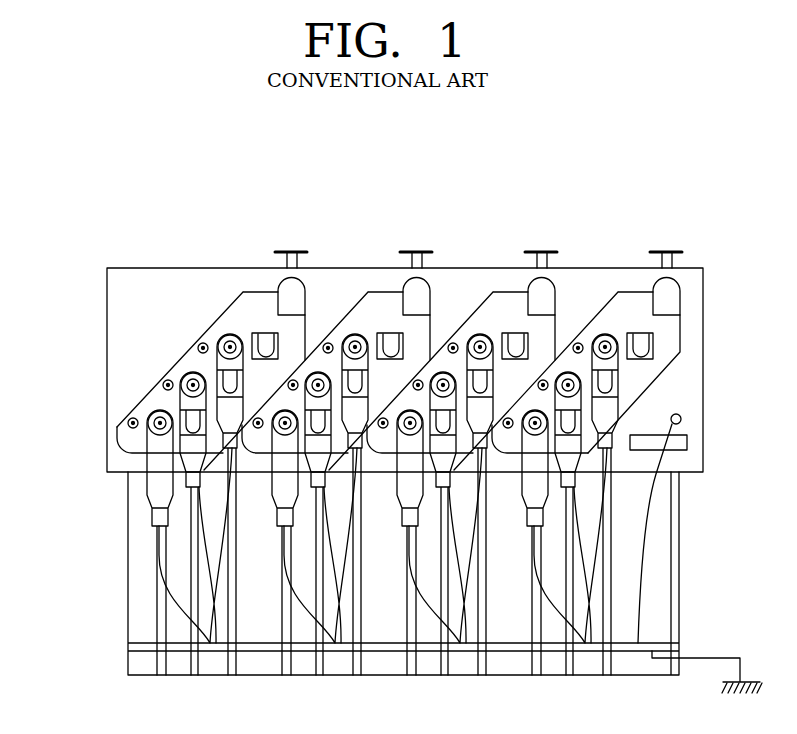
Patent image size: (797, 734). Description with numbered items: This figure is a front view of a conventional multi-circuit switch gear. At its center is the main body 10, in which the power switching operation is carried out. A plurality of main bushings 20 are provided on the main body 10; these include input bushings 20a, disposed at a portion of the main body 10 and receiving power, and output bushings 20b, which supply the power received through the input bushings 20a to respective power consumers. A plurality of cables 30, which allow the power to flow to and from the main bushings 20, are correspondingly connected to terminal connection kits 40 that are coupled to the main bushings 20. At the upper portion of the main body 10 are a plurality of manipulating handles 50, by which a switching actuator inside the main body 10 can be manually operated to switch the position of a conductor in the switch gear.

The main body 10 is at (118, 299).
The main bushings 20 is at (460, 175).
The input bushings 20a is at (193, 373).
The output bushings 20b is at (226, 462).
The cables 30 is at (157, 603).
The terminal connection kits 40 is at (131, 472).
The manipulating handles 50 is at (662, 250).